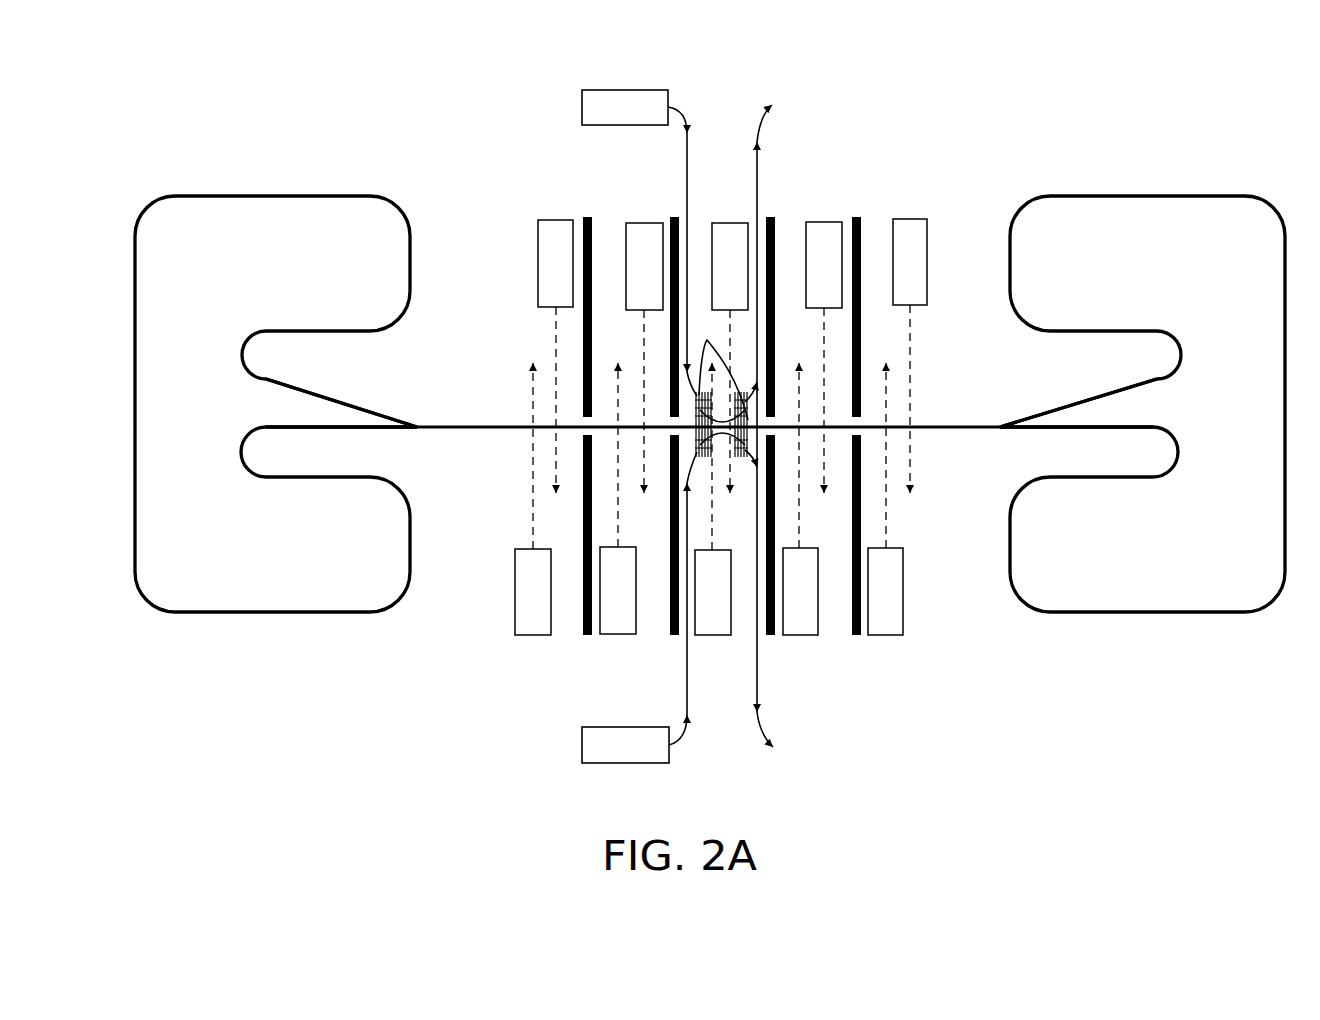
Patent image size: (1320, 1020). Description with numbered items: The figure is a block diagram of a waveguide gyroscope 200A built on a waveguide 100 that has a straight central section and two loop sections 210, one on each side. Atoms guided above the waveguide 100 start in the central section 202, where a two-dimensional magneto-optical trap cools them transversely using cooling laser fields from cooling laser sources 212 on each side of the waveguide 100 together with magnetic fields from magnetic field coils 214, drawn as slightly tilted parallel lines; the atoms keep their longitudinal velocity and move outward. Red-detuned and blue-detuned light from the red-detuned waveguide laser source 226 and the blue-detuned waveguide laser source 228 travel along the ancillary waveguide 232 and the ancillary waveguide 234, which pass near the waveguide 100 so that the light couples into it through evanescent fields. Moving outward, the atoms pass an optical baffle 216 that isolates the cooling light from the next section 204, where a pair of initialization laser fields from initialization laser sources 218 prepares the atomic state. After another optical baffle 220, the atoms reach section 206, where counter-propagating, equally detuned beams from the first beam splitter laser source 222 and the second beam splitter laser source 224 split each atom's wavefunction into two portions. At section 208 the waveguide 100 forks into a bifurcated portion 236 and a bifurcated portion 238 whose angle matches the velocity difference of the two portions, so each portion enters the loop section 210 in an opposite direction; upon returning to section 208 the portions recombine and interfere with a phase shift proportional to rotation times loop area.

The waveguide 100 is at (518, 430).
The waveguide gyroscope 200A is at (423, 93).
The section 202 is at (735, 195).
The section 204 is at (637, 172).
The section 206 is at (549, 172).
The section 208 is at (417, 412).
The loop section 210 is at (253, 175).
The cooling laser source 212 is at (721, 429).
The magnetic field coils 214 is at (722, 399).
The optical baffle 216 is at (676, 216).
The initialization laser source 218 is at (721, 428).
The optical baffle 220 is at (588, 216).
The first beam splitter laser source 222 is at (720, 427).
The second beam splitter laser source 224 is at (721, 427).
The red-detuned waveguide laser source 226 is at (634, 111).
The blue-detuned waveguide laser source 228 is at (634, 739).
The ancillary waveguide 232 is at (684, 123).
The ancillary waveguide 234 is at (682, 732).
The bifurcated portion 236 is at (396, 430).
The bifurcated portion 238 is at (355, 400).